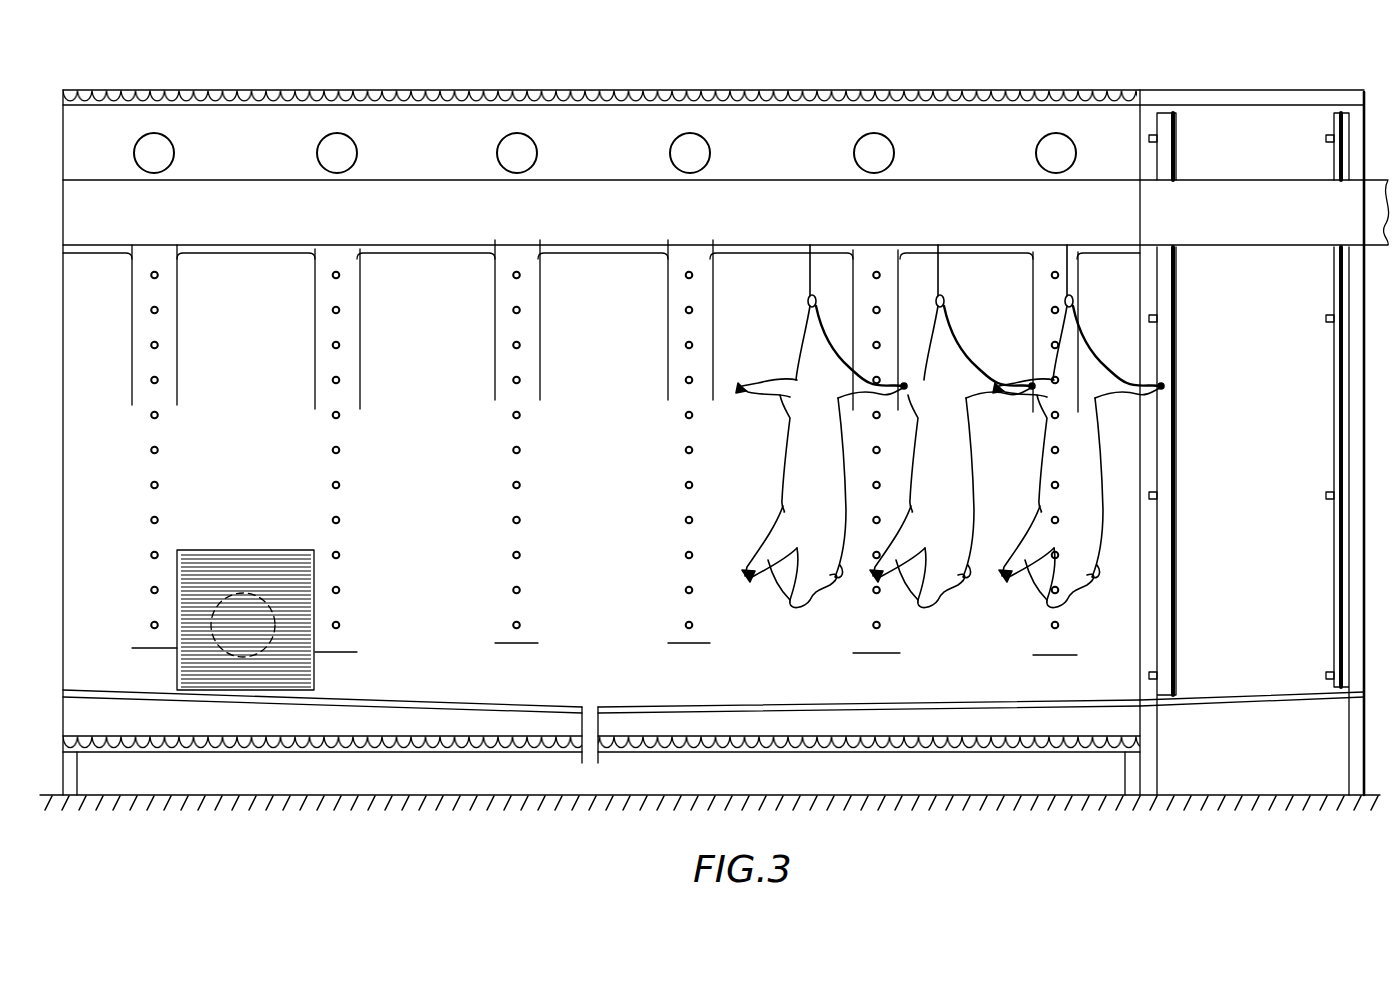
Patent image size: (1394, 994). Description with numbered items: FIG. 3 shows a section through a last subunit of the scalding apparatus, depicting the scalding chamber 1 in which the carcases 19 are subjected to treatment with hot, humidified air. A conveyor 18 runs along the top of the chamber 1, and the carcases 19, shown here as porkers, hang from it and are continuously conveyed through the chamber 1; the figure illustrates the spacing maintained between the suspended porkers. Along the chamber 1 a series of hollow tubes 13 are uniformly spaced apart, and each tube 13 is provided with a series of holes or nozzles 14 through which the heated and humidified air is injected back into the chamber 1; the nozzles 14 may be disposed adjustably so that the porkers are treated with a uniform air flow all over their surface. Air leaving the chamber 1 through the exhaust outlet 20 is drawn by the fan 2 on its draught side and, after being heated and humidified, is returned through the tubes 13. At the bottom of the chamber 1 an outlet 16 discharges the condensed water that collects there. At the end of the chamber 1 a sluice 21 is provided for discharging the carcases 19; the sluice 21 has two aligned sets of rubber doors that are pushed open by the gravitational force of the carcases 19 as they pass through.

The scalding chamber 1 is at (604, 458).
The fan 2 is at (246, 596).
The hollow tubes 13 is at (1056, 152).
The holes or nozzles 14 is at (520, 348).
The outlet 16 is at (590, 760).
The conveyor 18 is at (772, 197).
The carcases 19 is at (950, 445).
The exhaust outlet 20 is at (273, 668).
The sluices 21 is at (1242, 135).